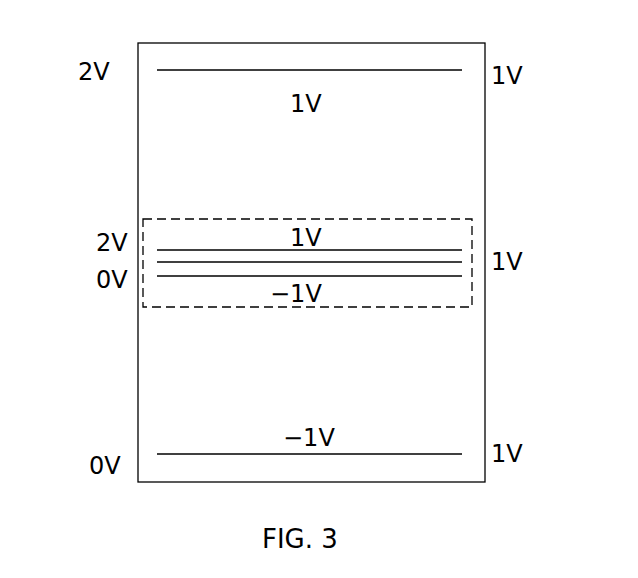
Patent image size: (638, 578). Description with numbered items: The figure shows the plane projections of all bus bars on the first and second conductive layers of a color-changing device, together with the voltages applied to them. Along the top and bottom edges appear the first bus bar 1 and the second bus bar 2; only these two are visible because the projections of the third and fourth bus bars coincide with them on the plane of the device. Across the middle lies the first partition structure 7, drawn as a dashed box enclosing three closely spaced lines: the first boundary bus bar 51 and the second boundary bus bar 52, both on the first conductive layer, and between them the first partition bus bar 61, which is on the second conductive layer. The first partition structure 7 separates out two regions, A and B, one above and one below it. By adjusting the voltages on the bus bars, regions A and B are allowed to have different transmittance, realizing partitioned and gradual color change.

The first bus bar 1 is at (156, 69).
The second bus bar 2 is at (156, 453).
The first partition structure 7 is at (420, 217).
The first boundary bus bar 51 is at (236, 250).
The second boundary bus bar 52 is at (236, 277).
The first partition bus bar 61 is at (462, 262).
The color-changing region A is at (300, 180).
The color-changing region B is at (296, 392).